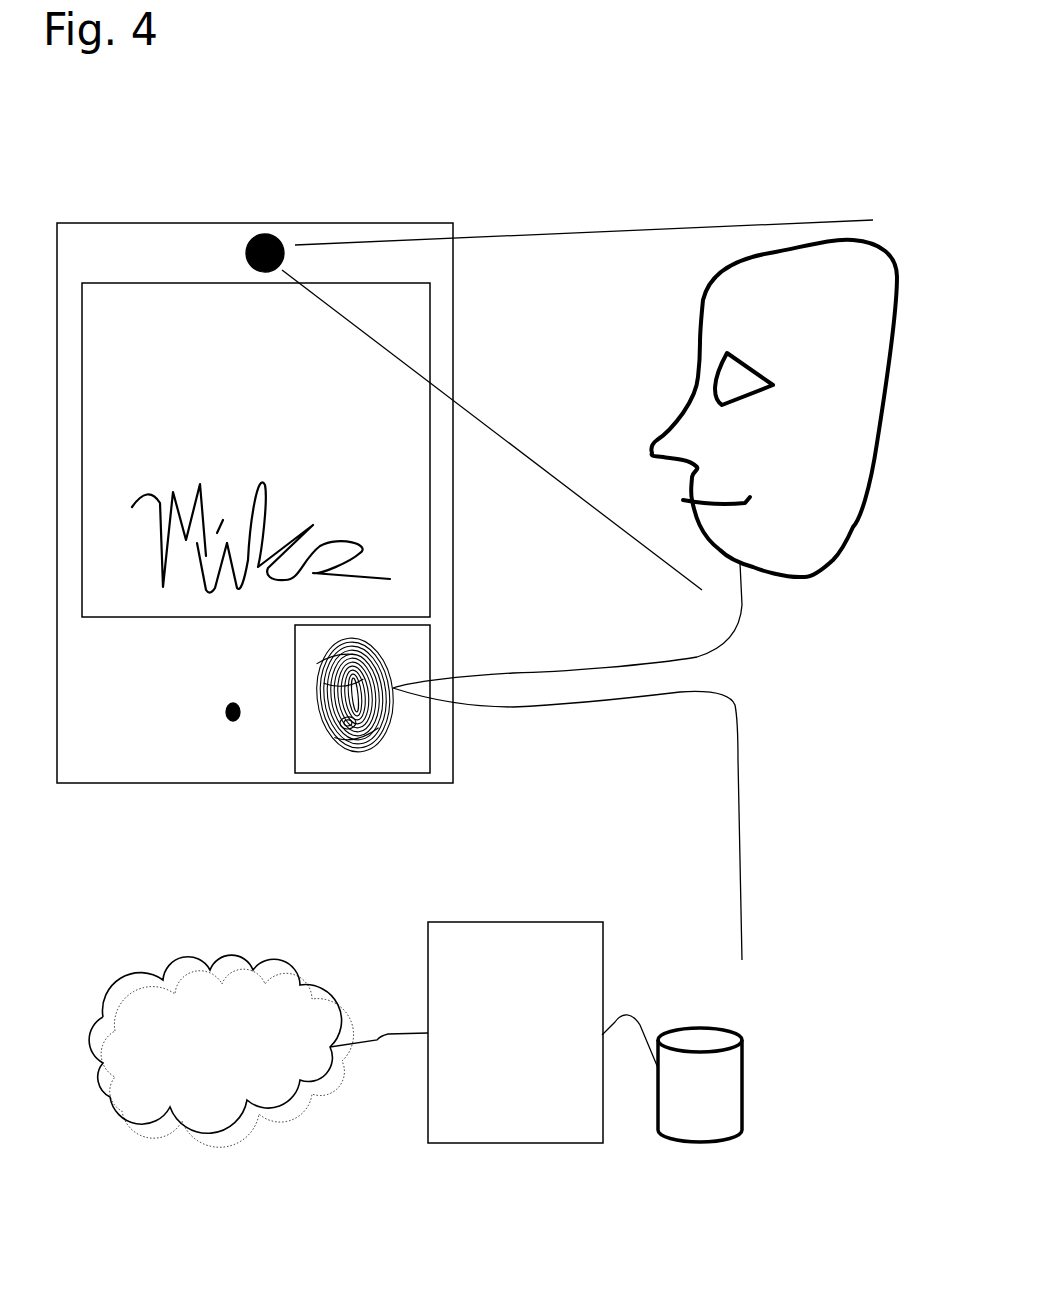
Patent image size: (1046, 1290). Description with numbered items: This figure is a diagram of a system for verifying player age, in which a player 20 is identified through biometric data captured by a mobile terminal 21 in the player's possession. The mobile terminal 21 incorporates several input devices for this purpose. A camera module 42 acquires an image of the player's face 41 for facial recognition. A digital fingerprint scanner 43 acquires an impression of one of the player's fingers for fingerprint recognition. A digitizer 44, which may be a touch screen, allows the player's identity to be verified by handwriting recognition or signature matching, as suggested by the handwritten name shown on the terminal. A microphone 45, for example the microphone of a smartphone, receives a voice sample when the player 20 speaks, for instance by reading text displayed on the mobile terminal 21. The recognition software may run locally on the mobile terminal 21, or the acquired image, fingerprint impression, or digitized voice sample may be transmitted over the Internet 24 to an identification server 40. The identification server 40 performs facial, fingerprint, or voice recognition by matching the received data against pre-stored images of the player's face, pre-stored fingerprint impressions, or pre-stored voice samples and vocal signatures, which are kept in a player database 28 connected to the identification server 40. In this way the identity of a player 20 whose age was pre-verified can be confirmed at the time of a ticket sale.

The player 20 is at (730, 922).
The mobile terminal 21 is at (132, 798).
The Internet 24 is at (110, 1123).
The player database 28 is at (720, 1085).
The identification server 40 is at (427, 1092).
The player's face 41 is at (688, 343).
The camera module 42 is at (240, 250).
The digital fingerprint scanner 43 is at (283, 733).
The digitizer 44 is at (133, 628).
The microphone 45 is at (215, 718).